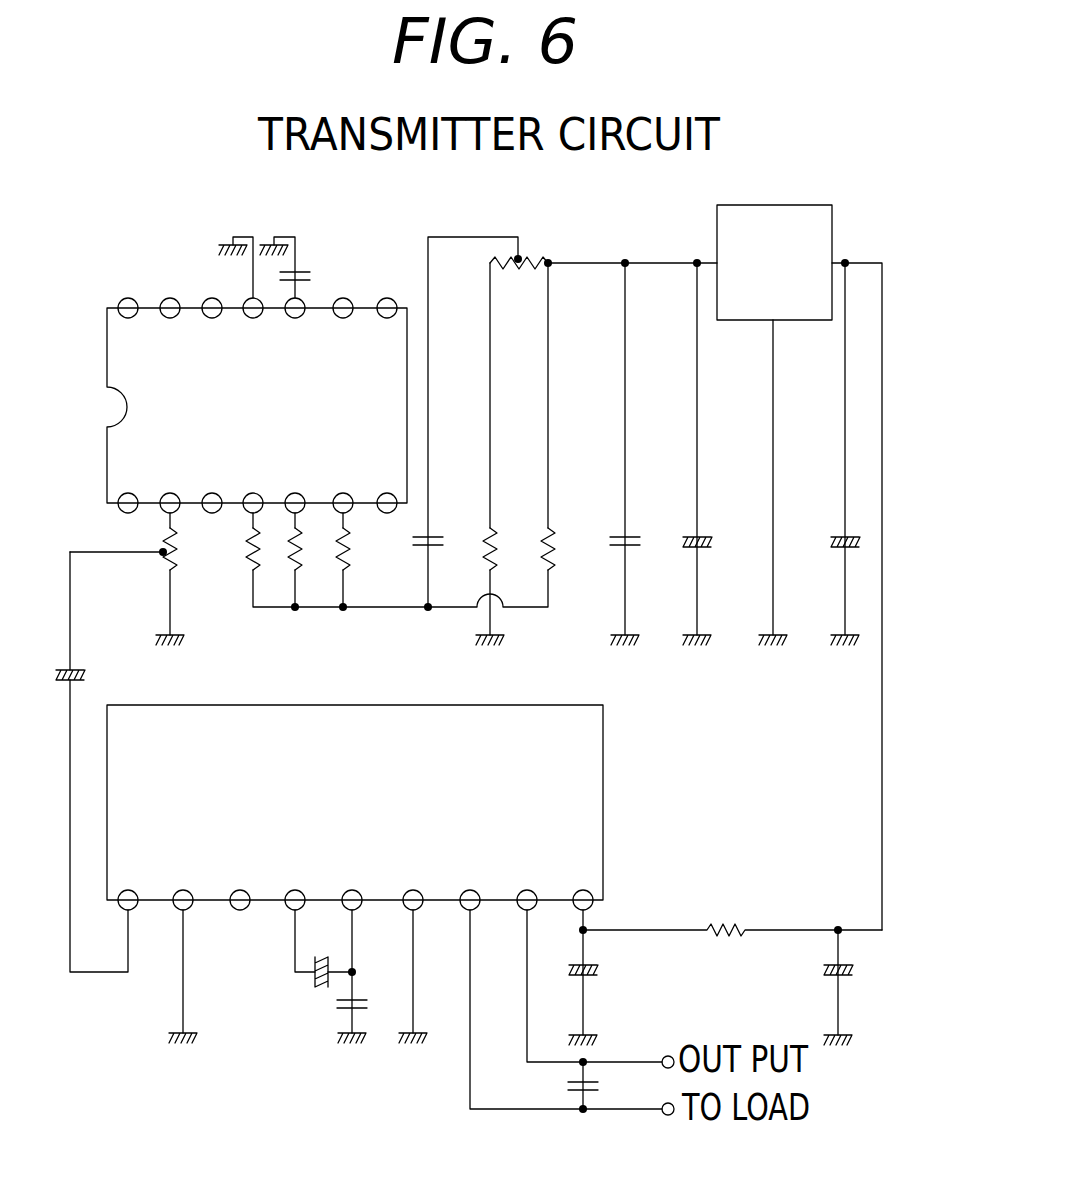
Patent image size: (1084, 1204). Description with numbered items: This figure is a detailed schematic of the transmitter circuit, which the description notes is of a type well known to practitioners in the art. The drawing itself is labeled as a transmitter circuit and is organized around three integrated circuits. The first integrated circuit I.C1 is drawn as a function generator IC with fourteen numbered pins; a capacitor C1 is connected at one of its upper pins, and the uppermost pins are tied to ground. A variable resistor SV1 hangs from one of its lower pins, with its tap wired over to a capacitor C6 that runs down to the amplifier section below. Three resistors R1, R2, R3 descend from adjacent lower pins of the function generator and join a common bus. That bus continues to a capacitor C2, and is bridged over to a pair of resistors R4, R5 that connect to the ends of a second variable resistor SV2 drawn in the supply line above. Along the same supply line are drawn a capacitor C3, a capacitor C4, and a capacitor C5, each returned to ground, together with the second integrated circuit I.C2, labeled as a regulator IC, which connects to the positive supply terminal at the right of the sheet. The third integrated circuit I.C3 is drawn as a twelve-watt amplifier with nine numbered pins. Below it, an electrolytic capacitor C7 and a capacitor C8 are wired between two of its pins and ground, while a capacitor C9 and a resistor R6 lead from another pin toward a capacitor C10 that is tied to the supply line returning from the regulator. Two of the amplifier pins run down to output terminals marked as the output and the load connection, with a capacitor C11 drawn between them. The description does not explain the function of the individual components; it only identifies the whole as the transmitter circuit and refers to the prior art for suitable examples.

The function generator IC I.C1 is at (232, 405).
The regulator IC I.C2 is at (741, 417).
The 12W amplifier IC I.C3 is at (355, 786).
The capacitor C1 is at (310, 268).
The capacitor C2 is at (467, 422).
The capacitor C3 is at (643, 447).
The capacitor C4 is at (715, 447).
The capacitor C5 is at (826, 449).
The capacitor C6 is at (92, 762).
The electrolytic capacitor C7 is at (325, 948).
The capacitor C8 is at (370, 971).
The capacitor C9 is at (603, 972).
The capacitor C10 is at (810, 980).
The capacitor C11 is at (604, 1085).
The resistor R1 is at (270, 562).
The resistor R2 is at (315, 562).
The resistor R3 is at (382, 562).
The resistor R4 is at (513, 449).
The resistor R5 is at (570, 416).
The resistor R6 is at (732, 912).
The variable resistor SV1 is at (123, 574).
The variable resistor SV2 is at (603, 243).